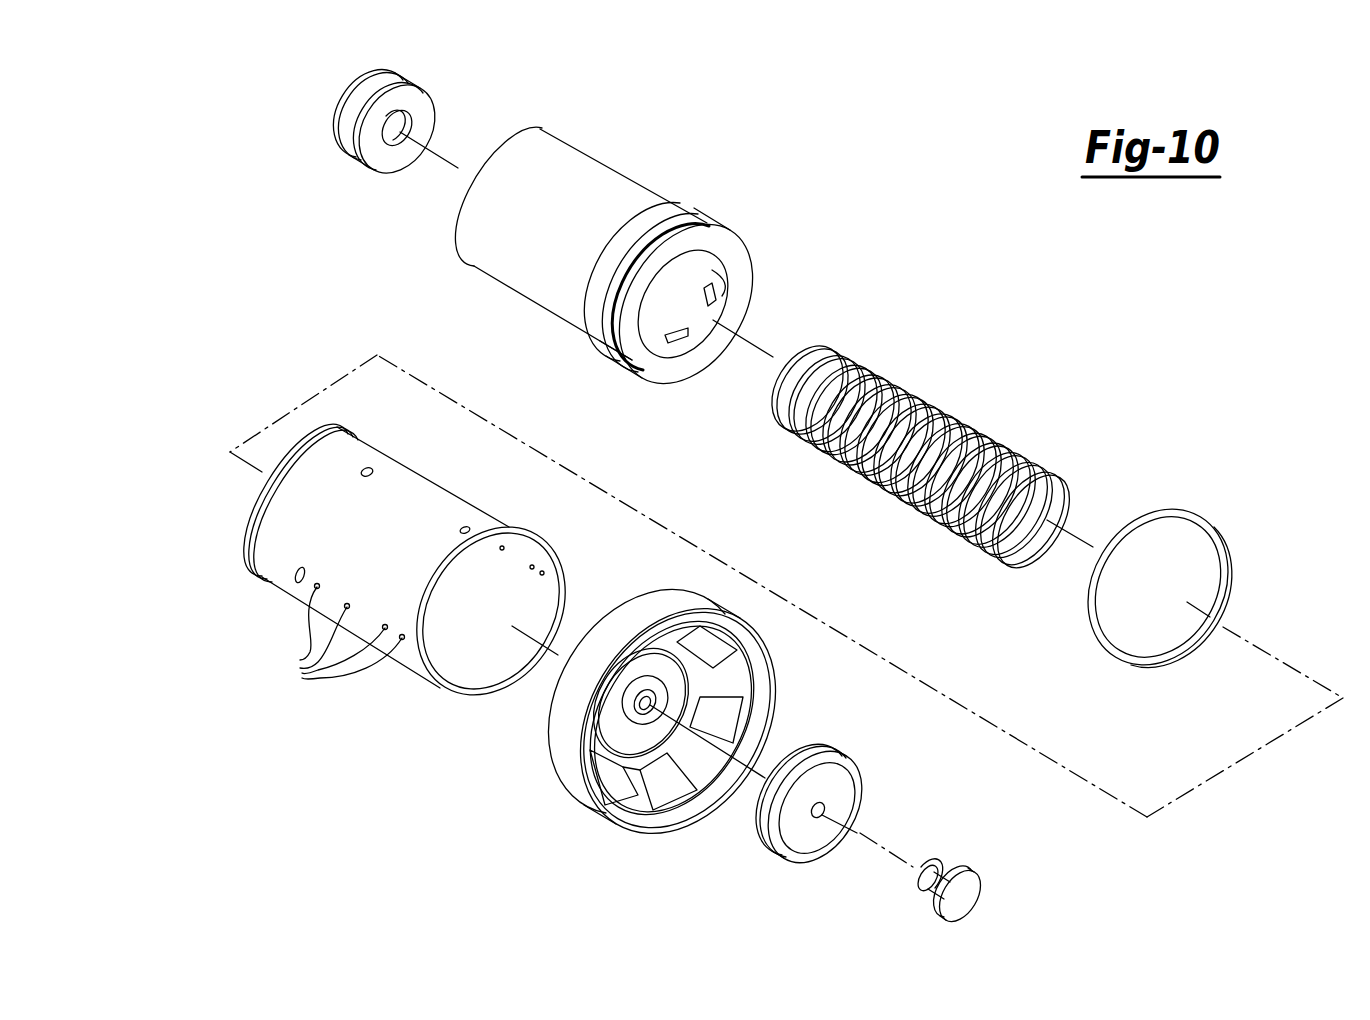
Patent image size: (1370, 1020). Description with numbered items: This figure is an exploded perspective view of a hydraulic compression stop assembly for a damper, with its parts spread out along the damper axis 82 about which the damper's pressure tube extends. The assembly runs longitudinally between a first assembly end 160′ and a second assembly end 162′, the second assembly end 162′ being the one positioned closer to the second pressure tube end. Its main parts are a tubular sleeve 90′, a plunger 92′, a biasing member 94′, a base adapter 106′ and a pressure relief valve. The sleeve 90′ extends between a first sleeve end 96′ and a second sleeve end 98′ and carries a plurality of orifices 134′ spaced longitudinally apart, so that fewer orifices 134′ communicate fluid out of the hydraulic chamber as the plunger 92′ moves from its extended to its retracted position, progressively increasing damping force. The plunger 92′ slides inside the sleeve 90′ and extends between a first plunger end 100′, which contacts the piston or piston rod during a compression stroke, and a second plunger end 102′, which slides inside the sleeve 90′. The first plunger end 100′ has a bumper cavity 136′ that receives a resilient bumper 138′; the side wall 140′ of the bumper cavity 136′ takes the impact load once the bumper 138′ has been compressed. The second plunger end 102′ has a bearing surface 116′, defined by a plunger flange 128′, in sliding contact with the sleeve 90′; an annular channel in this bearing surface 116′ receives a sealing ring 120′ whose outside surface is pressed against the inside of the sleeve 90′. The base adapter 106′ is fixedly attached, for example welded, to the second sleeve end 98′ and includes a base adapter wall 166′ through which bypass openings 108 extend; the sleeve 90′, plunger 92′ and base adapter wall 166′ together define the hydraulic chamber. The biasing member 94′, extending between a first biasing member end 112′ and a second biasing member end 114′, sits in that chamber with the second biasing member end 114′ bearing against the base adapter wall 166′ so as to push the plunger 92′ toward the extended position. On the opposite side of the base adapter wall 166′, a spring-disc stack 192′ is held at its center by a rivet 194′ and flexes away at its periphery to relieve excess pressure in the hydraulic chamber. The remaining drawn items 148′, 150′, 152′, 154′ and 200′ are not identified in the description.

The damper axis 82 is at (298, 400).
The sleeve 90′ is at (376, 565).
The plunger 92′ is at (656, 226).
The biasing member 94′ is at (884, 478).
The first sleeve end 96′ is at (245, 503).
The second sleeve end 98′ is at (512, 525).
The first plunger end 100′ is at (583, 148).
The second plunger end 102′ is at (722, 233).
The base adapter 106′ is at (630, 715).
The bypass openings 108 is at (724, 675).
The first biasing member end 112′ is at (765, 405).
The second biasing member end 114′ is at (1040, 570).
The bearing surface 116′ is at (680, 218).
The sealing ring 120′ is at (1157, 517).
The plunger flange 128′ is at (567, 300).
The orifices 134′ is at (302, 662).
The bumper cavity 136′ is at (663, 325).
The bumper 138′ is at (330, 150).
The side wall 140′ is at (718, 275).
The cap aperture 148′ is at (400, 124).
The cap body 150′ is at (347, 133).
The end cap 152′ is at (389, 115).
The cap front face 154′ is at (330, 125).
The first assembly end 160′ is at (389, 115).
The second assembly end 162′ is at (532, 745).
The base adapter wall 166′ is at (628, 775).
The spring-disc stack 192′ is at (860, 793).
The rivet 194′ is at (968, 890).
The rotor hub 200′ is at (648, 705).